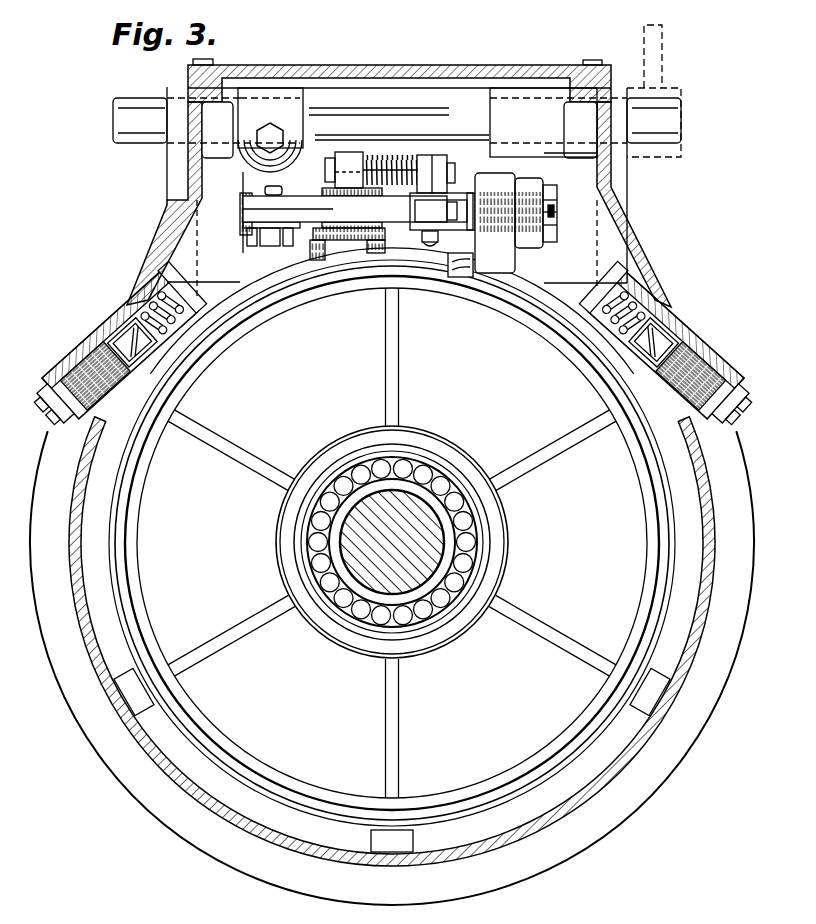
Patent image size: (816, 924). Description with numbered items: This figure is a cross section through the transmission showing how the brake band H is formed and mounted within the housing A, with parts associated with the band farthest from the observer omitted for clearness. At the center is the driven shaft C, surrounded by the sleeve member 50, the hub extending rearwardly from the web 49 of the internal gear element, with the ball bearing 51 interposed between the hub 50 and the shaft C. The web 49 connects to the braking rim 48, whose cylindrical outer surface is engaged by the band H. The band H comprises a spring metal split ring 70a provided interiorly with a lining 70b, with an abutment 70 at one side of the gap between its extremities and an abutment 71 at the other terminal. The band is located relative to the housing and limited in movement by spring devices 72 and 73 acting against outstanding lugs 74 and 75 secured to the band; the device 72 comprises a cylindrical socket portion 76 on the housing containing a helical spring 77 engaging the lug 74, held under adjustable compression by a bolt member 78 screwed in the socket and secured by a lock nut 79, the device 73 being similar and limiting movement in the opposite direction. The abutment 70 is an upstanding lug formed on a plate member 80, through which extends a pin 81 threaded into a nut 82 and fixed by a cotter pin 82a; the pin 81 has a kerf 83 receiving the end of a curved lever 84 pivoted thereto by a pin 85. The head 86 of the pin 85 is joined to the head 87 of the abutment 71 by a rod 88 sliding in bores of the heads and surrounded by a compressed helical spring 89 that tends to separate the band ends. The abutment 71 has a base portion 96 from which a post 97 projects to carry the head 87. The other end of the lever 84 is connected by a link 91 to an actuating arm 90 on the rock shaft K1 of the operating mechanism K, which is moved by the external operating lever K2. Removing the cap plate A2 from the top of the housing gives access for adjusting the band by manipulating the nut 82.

The braking rim 48 is at (392, 543).
The web 49 is at (280, 417).
The sleeve member 50 is at (455, 462).
The ball bearing 51 is at (470, 518).
The driven shaft C is at (444, 552).
The housing A is at (78, 466).
The external brake band H is at (690, 487).
The abutment 70 is at (510, 255).
The split ring 70a is at (641, 681).
The lining 70b is at (661, 699).
The abutment 71 is at (320, 260).
The spring device 72 is at (668, 327).
The spring device 73 is at (138, 308).
The outstanding lug 74 is at (628, 292).
The outstanding lug 75 is at (178, 296).
The cylindrical socket portion 76 is at (686, 342).
The helical spring 77 is at (652, 316).
The bolt member 78 is at (686, 360).
The lock nut 79 is at (745, 400).
The plate member 80 is at (545, 298).
The pin 81 is at (468, 278).
The nut 82 is at (528, 184).
The cotter pin 82a is at (552, 213).
The kerf 83 is at (455, 207).
The curved lever 84 is at (398, 230).
The pin 85 is at (431, 244).
The head 86 is at (430, 165).
The head 87 is at (352, 160).
The rod 88 is at (405, 168).
The helical spring 89 is at (388, 155).
The actuating arm 90 is at (256, 183).
The link 91 is at (256, 237).
The base portion 96 is at (350, 240).
The post 97 is at (332, 212).
The brake band operating mechanism K is at (397, 169).
The rock shaft K1 is at (323, 112).
The operating lever K2 is at (660, 47).
The cap plate A2 is at (413, 67).